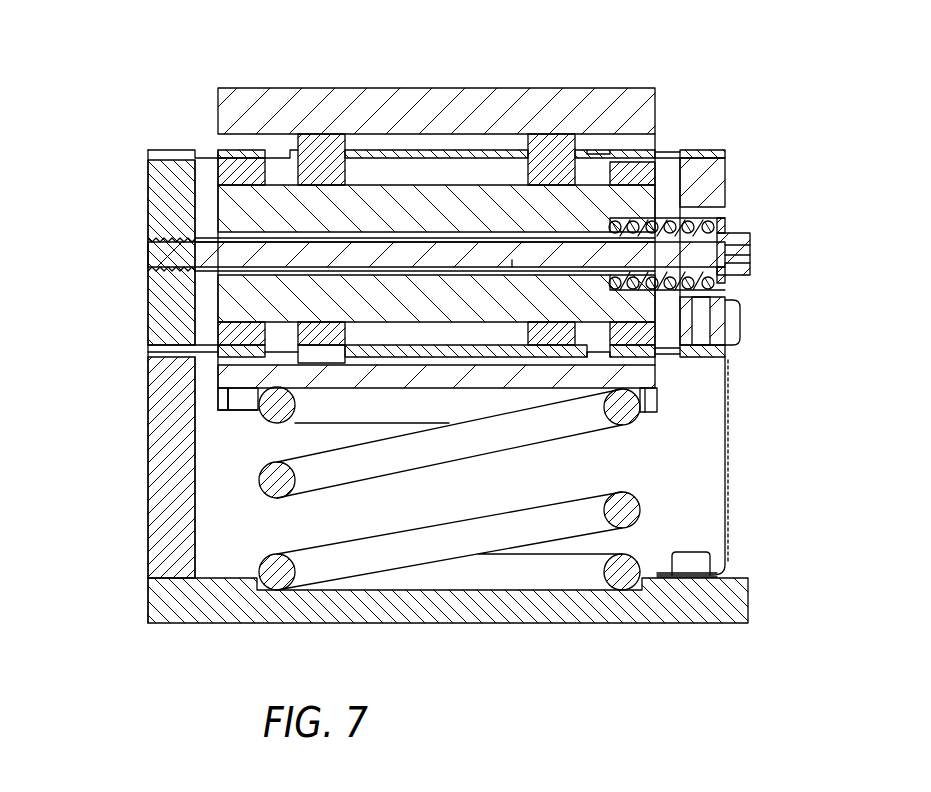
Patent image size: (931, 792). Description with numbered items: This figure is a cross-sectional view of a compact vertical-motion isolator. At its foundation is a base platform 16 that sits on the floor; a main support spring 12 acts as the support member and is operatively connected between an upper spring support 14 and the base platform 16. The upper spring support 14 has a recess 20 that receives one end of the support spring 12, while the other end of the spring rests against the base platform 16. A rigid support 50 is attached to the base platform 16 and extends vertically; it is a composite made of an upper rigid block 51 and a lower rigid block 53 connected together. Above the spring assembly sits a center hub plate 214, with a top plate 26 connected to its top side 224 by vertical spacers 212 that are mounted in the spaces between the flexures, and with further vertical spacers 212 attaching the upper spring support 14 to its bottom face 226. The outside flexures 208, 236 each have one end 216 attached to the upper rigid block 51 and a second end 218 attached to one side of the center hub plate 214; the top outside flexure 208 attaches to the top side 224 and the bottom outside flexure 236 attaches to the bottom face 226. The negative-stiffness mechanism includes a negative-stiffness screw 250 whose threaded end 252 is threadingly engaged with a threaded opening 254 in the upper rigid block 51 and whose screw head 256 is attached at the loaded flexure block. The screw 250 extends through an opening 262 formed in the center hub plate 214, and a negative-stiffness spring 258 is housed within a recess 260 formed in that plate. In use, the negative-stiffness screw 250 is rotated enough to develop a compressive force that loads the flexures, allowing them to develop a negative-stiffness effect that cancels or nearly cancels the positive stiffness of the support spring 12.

The main support spring 12 is at (628, 510).
The upper spring support 14 is at (657, 398).
The base platform 16 is at (690, 605).
The recess 20 is at (242, 390).
The top plate 26 is at (543, 103).
The rigid support 50 is at (137, 418).
The upper rigid block 51 is at (148, 308).
The lower rigid block 53 is at (148, 533).
The outside flexure 208 is at (550, 157).
The vertical spacers 212 is at (337, 145).
The center hub plate 214 is at (153, 155).
The flexure end 216 is at (160, 351).
The second end 218 is at (717, 150).
The top side 224 is at (445, 157).
The bottom face 226 is at (233, 203).
The outside flexure 236 is at (377, 352).
The negative-stiffness screw 250 is at (297, 245).
The threaded end 252 is at (167, 267).
The threaded opening 254 is at (148, 241).
The screw head 256 is at (750, 238).
The negative-stiffness spring 258 is at (712, 282).
The recess 260 is at (648, 247).
The opening 262 is at (543, 268).